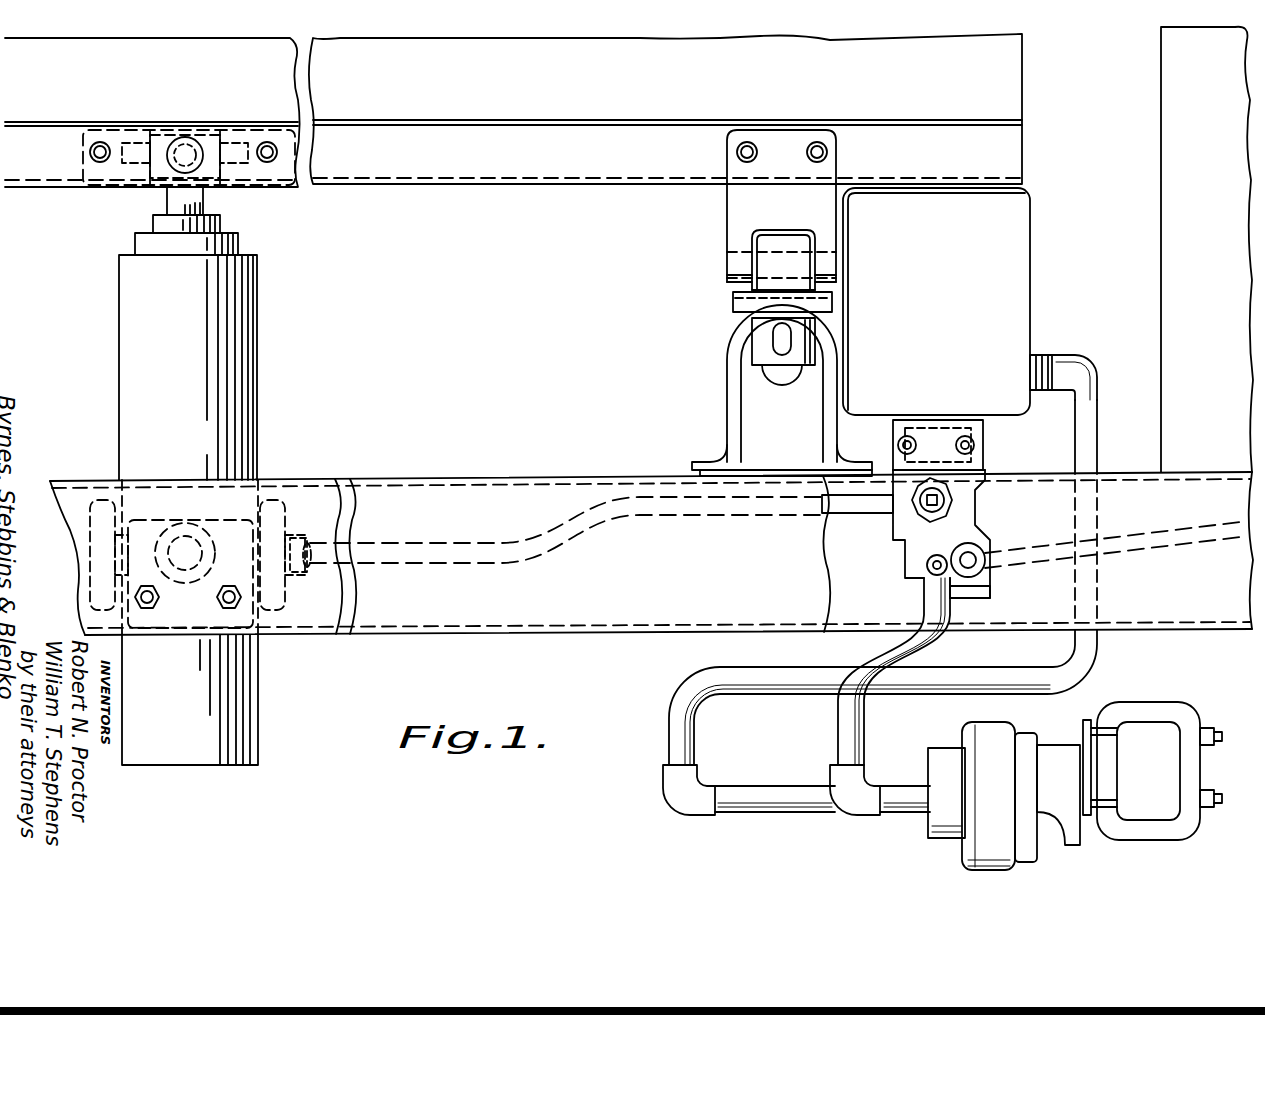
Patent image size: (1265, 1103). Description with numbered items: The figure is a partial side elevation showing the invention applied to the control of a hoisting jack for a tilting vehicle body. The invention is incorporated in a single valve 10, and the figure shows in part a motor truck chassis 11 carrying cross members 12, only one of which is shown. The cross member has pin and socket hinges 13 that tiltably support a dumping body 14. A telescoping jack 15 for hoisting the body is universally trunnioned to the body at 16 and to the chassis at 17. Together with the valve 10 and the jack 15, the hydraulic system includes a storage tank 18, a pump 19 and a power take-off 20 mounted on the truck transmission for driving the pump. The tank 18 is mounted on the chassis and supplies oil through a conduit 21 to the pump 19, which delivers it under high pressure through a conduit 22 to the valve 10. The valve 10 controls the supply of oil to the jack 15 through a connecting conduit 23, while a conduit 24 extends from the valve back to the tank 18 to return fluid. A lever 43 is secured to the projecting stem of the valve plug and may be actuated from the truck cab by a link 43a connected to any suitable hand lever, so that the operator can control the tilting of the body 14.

The valve 10 is at (905, 528).
The motor truck chassis 11 is at (596, 616).
The cross members 12 is at (737, 403).
The pin and socket hinges 13 is at (742, 300).
The dumping body 14 is at (533, 172).
The telescoping jack 15 is at (134, 375).
The trunnion to body 16 is at (147, 186).
The trunnion to chassis 17 is at (203, 548).
The storage tank 18 is at (1013, 262).
The pump 19 is at (970, 740).
The power take-off 20 is at (1140, 738).
The conduit 21 is at (740, 678).
The conduit 22 is at (872, 648).
The connecting conduit 23 is at (542, 540).
The conduit 24 is at (985, 450).
The lever 43 is at (905, 548).
The link 43a is at (1027, 546).